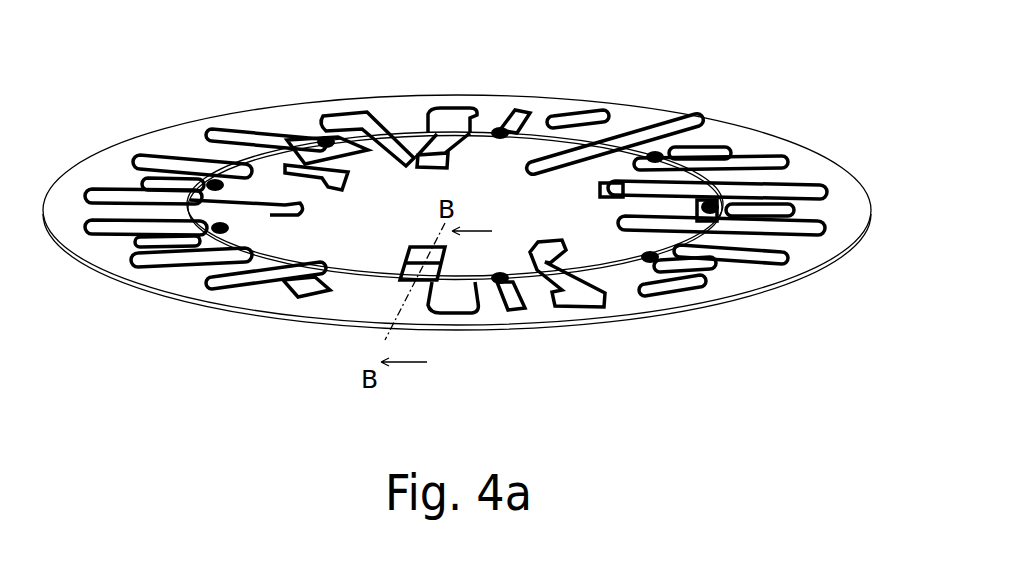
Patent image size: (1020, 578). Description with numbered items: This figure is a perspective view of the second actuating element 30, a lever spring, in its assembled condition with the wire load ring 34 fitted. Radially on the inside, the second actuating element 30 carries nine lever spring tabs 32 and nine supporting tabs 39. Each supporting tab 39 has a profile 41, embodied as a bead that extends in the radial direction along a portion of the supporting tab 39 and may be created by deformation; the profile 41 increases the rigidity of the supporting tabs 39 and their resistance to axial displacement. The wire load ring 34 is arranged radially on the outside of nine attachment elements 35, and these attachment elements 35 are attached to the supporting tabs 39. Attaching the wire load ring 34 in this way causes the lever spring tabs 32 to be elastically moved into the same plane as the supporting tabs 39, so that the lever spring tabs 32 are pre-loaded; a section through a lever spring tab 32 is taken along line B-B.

The second actuating element 30 is at (807, 170).
The lever spring tabs 32 is at (743, 237).
The wire load ring 34 is at (567, 137).
The attachment elements 35 is at (320, 137).
The supporting tabs 39 is at (730, 157).
The profile 41 is at (140, 240).